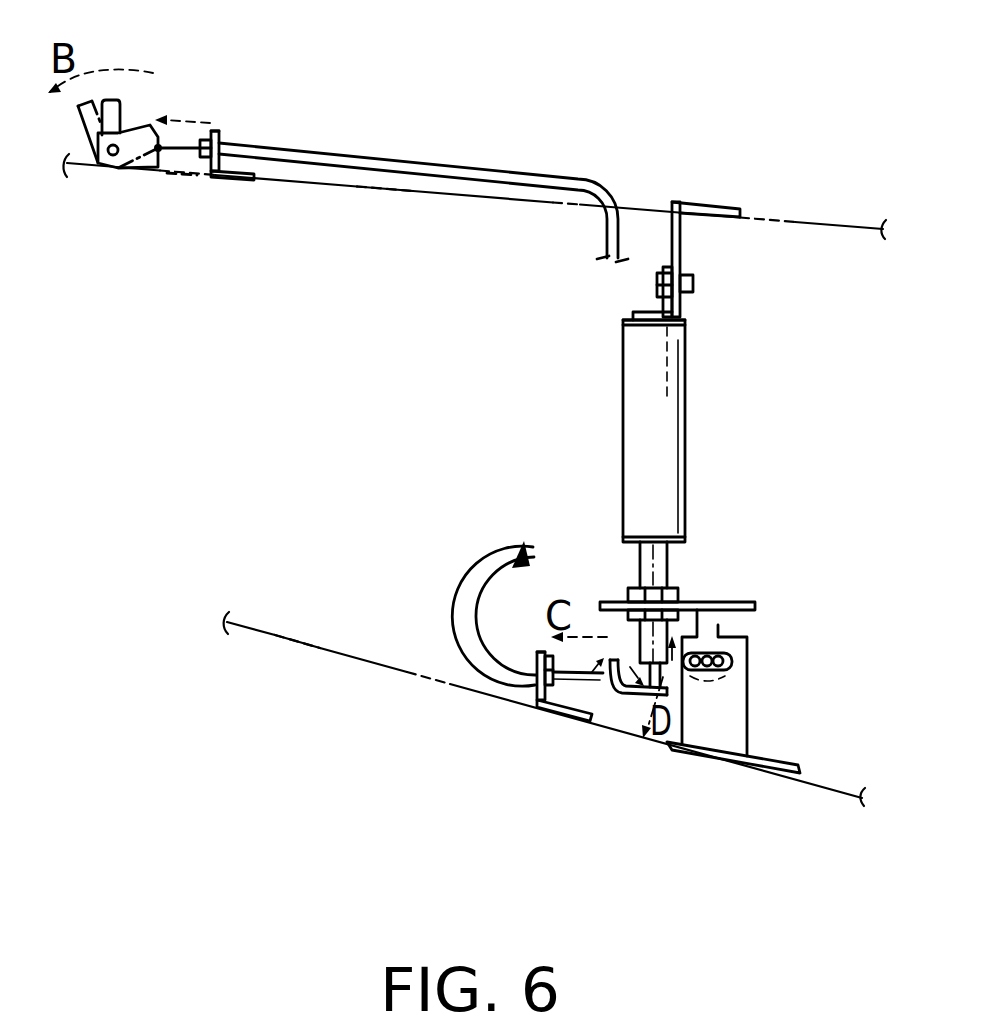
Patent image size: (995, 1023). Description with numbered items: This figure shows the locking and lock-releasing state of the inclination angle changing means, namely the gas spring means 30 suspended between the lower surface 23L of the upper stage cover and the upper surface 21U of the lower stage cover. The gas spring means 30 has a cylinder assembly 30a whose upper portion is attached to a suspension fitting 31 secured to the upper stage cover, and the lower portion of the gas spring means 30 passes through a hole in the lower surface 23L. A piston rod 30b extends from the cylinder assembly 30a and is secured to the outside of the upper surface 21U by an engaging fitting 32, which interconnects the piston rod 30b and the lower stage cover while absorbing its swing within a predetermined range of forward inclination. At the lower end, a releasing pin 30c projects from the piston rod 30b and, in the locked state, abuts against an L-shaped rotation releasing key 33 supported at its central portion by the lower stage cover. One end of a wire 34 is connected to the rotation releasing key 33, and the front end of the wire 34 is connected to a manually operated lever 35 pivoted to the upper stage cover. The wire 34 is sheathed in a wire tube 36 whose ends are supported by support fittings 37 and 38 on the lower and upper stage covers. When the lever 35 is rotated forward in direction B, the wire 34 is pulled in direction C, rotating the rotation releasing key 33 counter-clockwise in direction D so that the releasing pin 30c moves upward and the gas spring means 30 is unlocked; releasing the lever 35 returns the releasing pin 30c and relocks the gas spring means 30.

The upper surface of the lower stage cover 21U is at (277, 632).
The lower surface of the upper stage cover 23L is at (413, 192).
The gas spring means 30 is at (700, 370).
The cylinder assembly 30a is at (665, 428).
The piston rod 30b is at (652, 563).
The releasing pin 30c is at (687, 668).
The suspension fitting 31 is at (680, 247).
The engaging fitting 32 is at (727, 697).
The rotation releasing key 33 is at (631, 700).
The wire 34 is at (183, 133).
The lever 35 is at (113, 100).
The wire tube 36 is at (428, 165).
The support fitting 37 is at (537, 652).
The support fitting 38 is at (214, 140).